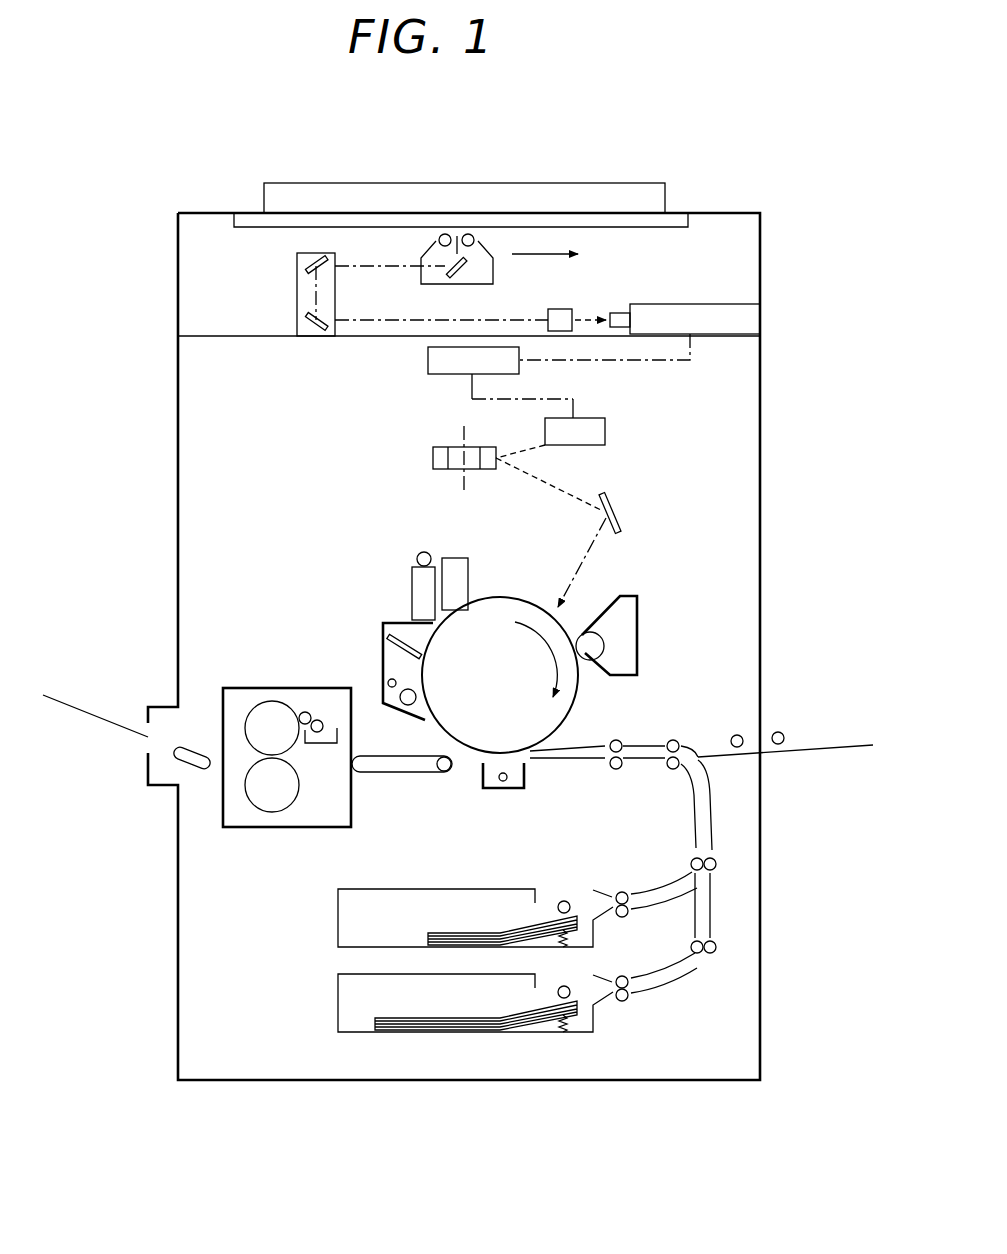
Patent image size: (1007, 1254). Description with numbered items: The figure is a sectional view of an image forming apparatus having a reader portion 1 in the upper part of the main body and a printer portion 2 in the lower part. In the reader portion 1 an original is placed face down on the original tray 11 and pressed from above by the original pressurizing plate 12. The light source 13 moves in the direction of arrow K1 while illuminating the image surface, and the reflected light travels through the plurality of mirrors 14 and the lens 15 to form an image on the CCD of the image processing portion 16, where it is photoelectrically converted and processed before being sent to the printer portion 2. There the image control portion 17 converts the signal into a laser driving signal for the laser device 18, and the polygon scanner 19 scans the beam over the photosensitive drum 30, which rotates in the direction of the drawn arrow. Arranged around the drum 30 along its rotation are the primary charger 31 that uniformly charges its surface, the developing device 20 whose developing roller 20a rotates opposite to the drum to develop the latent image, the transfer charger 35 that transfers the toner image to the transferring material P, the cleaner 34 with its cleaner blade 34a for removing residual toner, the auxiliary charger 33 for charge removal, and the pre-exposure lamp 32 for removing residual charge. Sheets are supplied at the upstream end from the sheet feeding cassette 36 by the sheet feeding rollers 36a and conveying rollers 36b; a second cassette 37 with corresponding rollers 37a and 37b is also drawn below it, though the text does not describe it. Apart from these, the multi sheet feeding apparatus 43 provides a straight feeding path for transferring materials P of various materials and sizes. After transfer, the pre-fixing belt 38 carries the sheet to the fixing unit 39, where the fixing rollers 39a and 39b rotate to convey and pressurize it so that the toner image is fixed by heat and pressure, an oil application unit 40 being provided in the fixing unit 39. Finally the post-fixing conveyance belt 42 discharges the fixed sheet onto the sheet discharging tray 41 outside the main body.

The reader portion 1 is at (178, 284).
The printer portion 2 is at (178, 447).
The original tray 11 is at (683, 211).
The original pressurizing plate 12 is at (590, 182).
The light source 13 is at (468, 233).
The mirrors 14 is at (297, 280).
The lens 15 is at (562, 309).
The image processing portion 16 is at (685, 305).
The image control portion 17 is at (428, 360).
The laser device 18 is at (605, 428).
The polygon scanner 19 is at (433, 458).
The developing device 20 is at (637, 637).
The developing roller 20a is at (590, 633).
The photosensitive drum 30 is at (579, 690).
The primary charger 31 is at (456, 558).
The pre-exposure lamp 32 is at (422, 552).
The auxiliary charger 33 is at (412, 576).
The cleaner 34 is at (383, 645).
The cleaner blade 34a is at (396, 640).
The transfer charger 35 is at (503, 788).
The sheet feeding cassette 36 is at (380, 889).
The sheet feeding rollers 36a is at (626, 893).
The conveying rollers 36b is at (716, 862).
The lower sheet cassette 37 is at (345, 974).
The lower feed rollers 37a is at (628, 978).
The lower conveying rollers 37b is at (714, 954).
The pre-fixing belt 38 is at (397, 773).
The fixing unit 39 is at (226, 688).
The fixing roller 39a is at (268, 710).
The fixing roller 39b is at (265, 803).
The oil application unit 40 is at (313, 715).
The sheet discharging tray 41 is at (76, 707).
The post-fixing conveyance belt 42 is at (190, 762).
The multi sheet feeding apparatus 43 is at (805, 752).
The arrow K1 is at (560, 255).
The transferring material P is at (540, 935).